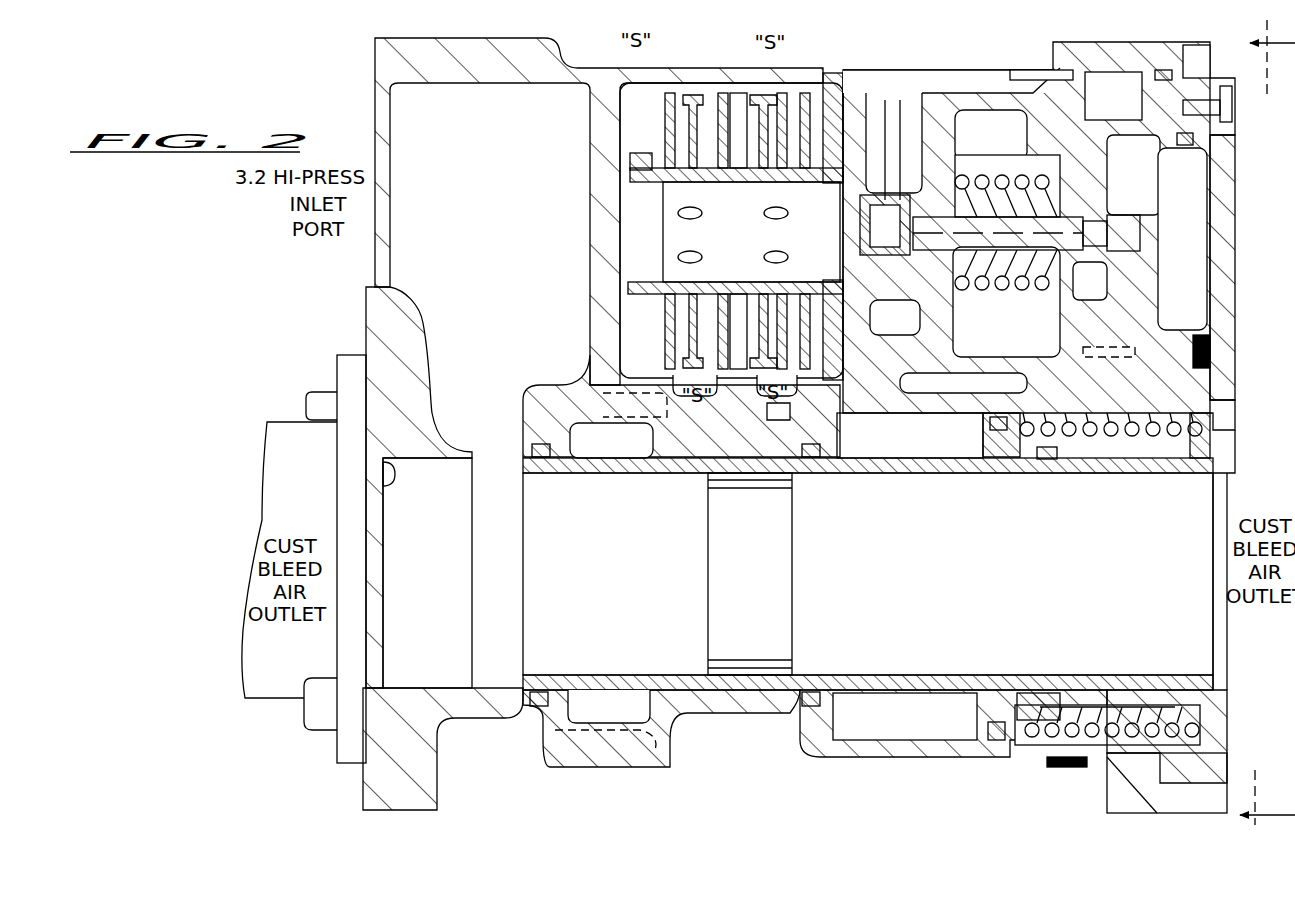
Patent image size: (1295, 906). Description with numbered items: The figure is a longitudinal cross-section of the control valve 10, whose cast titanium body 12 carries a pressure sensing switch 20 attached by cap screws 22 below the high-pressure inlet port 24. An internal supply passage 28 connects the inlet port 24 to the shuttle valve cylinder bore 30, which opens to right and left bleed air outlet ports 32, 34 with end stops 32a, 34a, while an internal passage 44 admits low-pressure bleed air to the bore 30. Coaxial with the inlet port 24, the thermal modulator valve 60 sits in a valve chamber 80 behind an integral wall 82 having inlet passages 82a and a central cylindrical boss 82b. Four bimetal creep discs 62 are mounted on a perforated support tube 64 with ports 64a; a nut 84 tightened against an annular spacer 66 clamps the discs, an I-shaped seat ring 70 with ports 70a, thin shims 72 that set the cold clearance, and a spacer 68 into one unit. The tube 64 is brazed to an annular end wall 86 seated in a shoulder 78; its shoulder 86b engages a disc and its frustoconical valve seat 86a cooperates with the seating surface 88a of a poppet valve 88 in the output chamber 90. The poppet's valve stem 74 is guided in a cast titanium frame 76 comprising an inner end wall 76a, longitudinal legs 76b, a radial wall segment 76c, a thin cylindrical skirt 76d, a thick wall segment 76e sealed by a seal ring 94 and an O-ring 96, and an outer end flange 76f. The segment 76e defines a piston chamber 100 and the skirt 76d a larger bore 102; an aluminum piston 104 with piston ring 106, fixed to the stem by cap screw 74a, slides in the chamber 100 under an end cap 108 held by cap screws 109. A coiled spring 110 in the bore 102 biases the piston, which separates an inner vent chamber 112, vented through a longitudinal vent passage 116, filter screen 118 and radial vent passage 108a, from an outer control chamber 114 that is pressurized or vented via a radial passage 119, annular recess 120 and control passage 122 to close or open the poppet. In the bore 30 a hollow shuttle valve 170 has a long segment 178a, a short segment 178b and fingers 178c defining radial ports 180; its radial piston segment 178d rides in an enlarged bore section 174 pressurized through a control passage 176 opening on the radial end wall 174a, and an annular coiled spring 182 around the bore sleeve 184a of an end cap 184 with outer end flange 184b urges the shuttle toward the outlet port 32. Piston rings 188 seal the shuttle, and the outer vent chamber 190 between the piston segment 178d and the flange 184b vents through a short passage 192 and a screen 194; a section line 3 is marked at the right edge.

The control valve 10 is at (722, 772).
The valve body 12 is at (885, 50).
The pressure sensing switch 20 is at (240, 608).
The cap screws 22 is at (310, 410).
The inlet port 24 is at (378, 285).
The internal supply passage 28 is at (432, 408).
The shuttle valve cylinder bore 30 is at (413, 688).
The right hand bleed air outlet port 32 is at (355, 688).
The end stop 32a is at (383, 478).
The left hand bleed air outlet port 34 is at (1230, 480).
The end stop 34a is at (1213, 472).
The internal passage 44 is at (640, 400).
The thermal modulator valve 60 is at (738, 100).
The creep discs 62 is at (668, 95).
The support tube 64 is at (665, 180).
The ports 64a is at (690, 252).
The annular spacer 66 is at (635, 158).
The annular spacer 68 is at (690, 292).
The seat ring 70 is at (693, 100).
The ports 70a is at (680, 213).
The shim 72 is at (697, 145).
The valve stem 74 is at (966, 240).
The cap screw 74a is at (1140, 225).
The frame 76 is at (1070, 85).
The inner end wall 76a is at (858, 375).
The longitudinal legs 76b is at (872, 165).
The radial wall segment 76c is at (940, 315).
The cylindrical skirt 76d is at (975, 185).
The thick wall segment 76e is at (1215, 390).
The outer end flange 76f is at (1212, 60).
The shoulder 78 is at (832, 90).
The valve chamber 80 is at (640, 342).
The integral wall 82 is at (620, 110).
The inlet passages 82a is at (622, 160).
The cylindrical boss 82b is at (665, 243).
The nut 84 is at (630, 175).
The end wall 86 is at (852, 120).
The valve seat 86a is at (845, 200).
The shoulder 86b is at (843, 270).
The poppet valve 88 is at (897, 155).
The seating surface 88a is at (855, 280).
The output chamber 90 is at (985, 75).
The inner seal ring 94 is at (1045, 74).
The O-ring 96 is at (1200, 60).
The piston chamber 100 is at (1112, 120).
The inner cylindrical bore 102 is at (962, 112).
The piston 104 is at (1085, 275).
The piston ring 106 is at (1085, 318).
The end cap 108 is at (1237, 228).
The radial vent passage 108a is at (1235, 358).
The cap screws 109 is at (1237, 103).
The coiled spring 110 is at (1005, 180).
The inner vent chamber 112 is at (958, 341).
The outer control chamber 114 is at (1162, 256).
The longitudinal vent passage 116 is at (1173, 348).
The filter screen 118 is at (1212, 345).
The radial passage 119 is at (1145, 125).
The annular recess 120 is at (1115, 70).
The control passage 122 is at (1122, 440).
The shuttle valve 170 is at (840, 576).
The enlarged bore section 174 is at (905, 740).
The radial end wall 174a is at (812, 713).
The control passage 176 is at (765, 430).
The long segment 178a is at (875, 676).
The short segment 178b is at (545, 678).
The fingers 178c is at (725, 490).
The piston segment 178d is at (965, 450).
The radial ports 180 is at (760, 478).
The coiled spring 182 is at (1020, 740).
The end cap member 184 is at (1228, 703).
The cylindrical bore section 184a is at (1075, 700).
The outer end flange 184b is at (1205, 765).
The piston rings 188 is at (537, 707).
The outer vent chamber 190 is at (1100, 740).
The short passage 192 is at (1060, 757).
The screen 194 is at (1065, 768).
The section line 3- 3 is at (1267, 422).